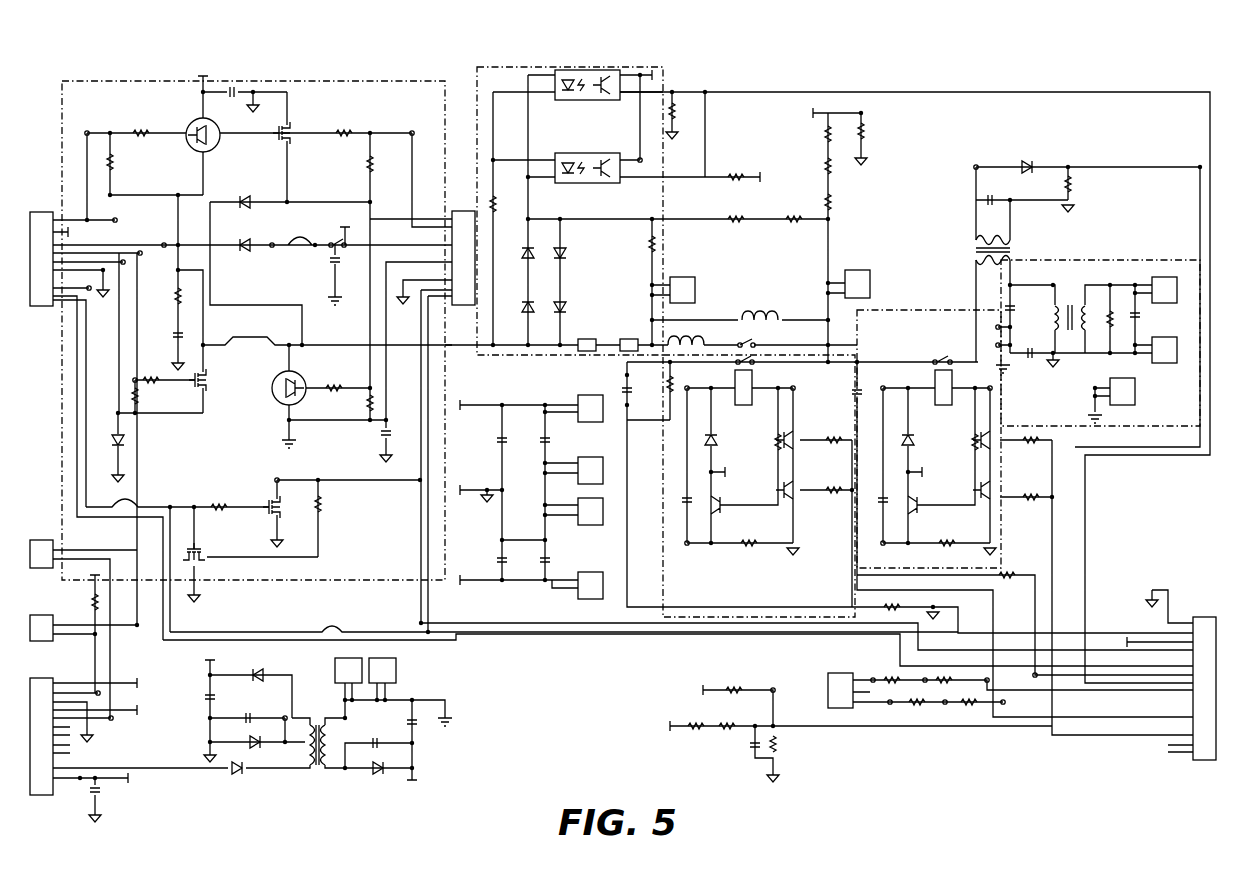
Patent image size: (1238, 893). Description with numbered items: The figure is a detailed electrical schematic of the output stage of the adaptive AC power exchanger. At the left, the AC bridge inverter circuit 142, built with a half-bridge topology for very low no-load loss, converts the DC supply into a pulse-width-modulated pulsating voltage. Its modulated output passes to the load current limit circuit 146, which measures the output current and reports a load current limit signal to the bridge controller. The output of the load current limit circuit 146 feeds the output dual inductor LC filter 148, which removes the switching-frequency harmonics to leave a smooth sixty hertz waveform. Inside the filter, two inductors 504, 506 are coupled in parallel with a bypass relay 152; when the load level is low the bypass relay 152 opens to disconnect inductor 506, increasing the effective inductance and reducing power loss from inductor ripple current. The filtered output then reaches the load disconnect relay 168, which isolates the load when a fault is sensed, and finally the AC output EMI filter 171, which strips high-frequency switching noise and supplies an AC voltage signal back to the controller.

The AC bridge inverter circuit 142 is at (426, 111).
The load current limit circuit 146 is at (624, 311).
The output dual inductor LC filter 148 is at (709, 601).
The bypass relay 152 is at (754, 382).
The load disconnect relay 168 is at (905, 336).
The AC output EMI filter 171 is at (1192, 418).
The inductor 504 is at (770, 312).
The inductor 506 is at (701, 346).